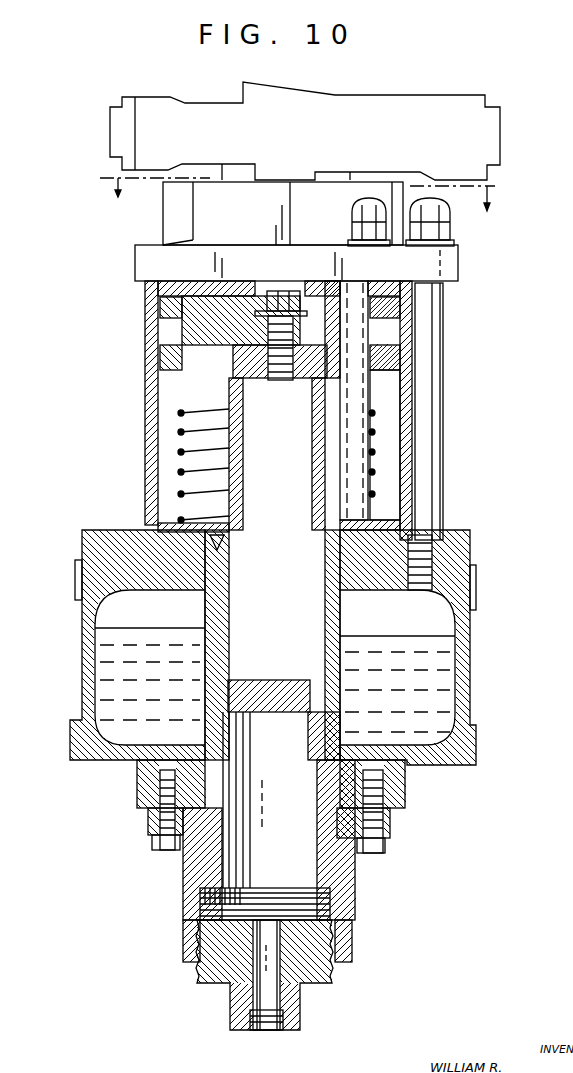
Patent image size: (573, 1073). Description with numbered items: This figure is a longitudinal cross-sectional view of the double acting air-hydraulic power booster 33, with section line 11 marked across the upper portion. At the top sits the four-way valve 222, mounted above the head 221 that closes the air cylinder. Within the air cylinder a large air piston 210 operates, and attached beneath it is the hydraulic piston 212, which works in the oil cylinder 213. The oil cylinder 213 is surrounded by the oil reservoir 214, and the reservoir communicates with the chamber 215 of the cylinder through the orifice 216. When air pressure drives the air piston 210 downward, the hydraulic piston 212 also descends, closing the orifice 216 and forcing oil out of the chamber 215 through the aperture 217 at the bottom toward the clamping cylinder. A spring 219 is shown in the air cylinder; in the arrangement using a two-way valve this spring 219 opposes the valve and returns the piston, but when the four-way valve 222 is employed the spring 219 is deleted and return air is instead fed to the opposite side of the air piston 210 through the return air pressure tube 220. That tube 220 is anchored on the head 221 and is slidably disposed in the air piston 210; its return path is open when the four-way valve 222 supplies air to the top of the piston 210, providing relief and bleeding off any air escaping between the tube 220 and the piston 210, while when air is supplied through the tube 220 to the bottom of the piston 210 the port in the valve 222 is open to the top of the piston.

The section line 11- 11 is at (298, 205).
The power booster 33 is at (478, 558).
The air piston 210 is at (170, 330).
The hydraulic piston 212 is at (292, 714).
The oil cylinder 213 is at (190, 872).
The oil reservoir 214 is at (100, 650).
The chamber 215 is at (300, 870).
The orifice 216 is at (218, 722).
The aperture 217 is at (268, 1030).
The spring 219 is at (180, 434).
The return air pressure tube 220 is at (355, 440).
The head 221 is at (457, 272).
The 4-way valve 222 is at (493, 157).